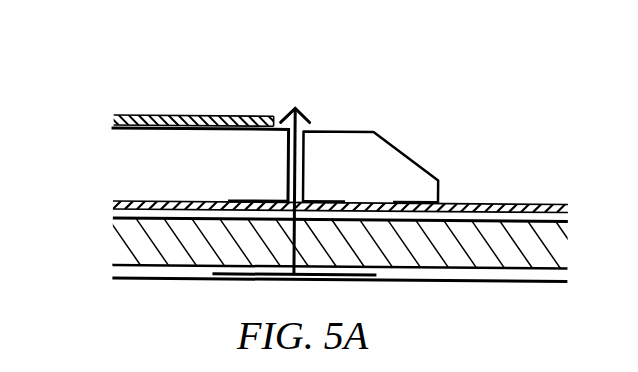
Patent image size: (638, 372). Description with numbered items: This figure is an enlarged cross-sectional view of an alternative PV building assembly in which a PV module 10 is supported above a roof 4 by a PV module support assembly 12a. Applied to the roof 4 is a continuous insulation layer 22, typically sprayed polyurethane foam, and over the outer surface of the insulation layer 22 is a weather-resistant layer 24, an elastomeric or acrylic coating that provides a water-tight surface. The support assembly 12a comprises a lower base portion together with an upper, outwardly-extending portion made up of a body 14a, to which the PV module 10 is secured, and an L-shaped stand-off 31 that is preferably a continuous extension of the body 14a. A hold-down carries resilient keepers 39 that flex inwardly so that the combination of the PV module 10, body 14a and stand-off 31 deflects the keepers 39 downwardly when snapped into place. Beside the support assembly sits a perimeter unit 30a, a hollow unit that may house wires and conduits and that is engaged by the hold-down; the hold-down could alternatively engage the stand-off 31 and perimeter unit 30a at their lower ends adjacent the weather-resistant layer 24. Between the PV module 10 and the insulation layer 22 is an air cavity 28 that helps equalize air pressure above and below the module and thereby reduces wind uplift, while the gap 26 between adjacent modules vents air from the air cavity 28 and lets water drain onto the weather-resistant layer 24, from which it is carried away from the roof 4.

The roof 4 is at (468, 282).
The PV module 10 is at (194, 102).
The PV module support assembly 12a is at (340, 99).
The body 14a is at (196, 165).
The insulation layer 22 is at (334, 269).
The weather-resistant layer 24 is at (340, 189).
The gap 26 is at (394, 40).
The air cavity 28 is at (191, 188).
The perimeter unit 30a is at (391, 158).
The stand-off 31 is at (287, 167).
The resilient keeper 39 is at (259, 99).